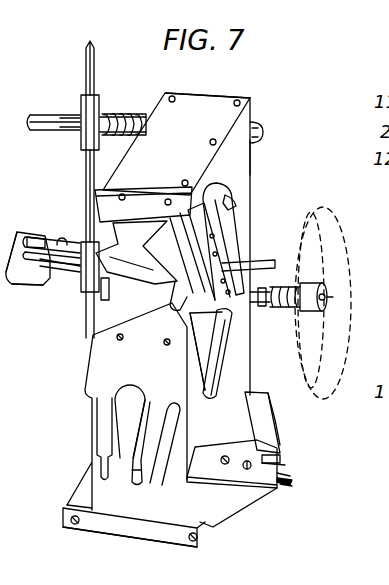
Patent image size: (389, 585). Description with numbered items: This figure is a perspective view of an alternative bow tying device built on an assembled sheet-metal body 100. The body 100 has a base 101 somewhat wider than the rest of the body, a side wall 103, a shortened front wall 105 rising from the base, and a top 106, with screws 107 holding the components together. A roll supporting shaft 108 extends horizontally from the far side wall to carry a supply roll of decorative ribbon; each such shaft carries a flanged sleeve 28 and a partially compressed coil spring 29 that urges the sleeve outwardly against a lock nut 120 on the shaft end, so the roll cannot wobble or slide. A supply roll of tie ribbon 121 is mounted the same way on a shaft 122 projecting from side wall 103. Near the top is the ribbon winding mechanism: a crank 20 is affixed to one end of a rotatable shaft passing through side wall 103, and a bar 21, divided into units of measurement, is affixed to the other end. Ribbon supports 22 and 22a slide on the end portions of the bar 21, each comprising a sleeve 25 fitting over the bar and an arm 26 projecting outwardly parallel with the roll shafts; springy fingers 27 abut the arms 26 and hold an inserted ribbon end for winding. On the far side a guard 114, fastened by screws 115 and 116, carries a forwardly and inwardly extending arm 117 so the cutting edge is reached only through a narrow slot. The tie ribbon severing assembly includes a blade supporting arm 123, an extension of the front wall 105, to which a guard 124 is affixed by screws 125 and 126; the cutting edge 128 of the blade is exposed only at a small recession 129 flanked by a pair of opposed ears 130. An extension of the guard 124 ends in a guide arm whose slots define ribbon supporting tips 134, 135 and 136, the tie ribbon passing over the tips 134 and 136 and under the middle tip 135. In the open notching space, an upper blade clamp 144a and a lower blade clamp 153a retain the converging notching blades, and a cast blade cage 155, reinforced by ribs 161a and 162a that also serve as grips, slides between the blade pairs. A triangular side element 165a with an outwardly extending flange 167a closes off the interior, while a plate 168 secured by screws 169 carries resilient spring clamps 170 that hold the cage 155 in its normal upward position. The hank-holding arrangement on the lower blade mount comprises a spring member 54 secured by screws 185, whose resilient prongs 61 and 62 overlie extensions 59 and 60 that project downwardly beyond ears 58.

The crank 20 is at (225, 267).
The bar 21 is at (85, 167).
The ribbon support 22 is at (78, 137).
The ribbon support 22a is at (80, 268).
The sleeve 25 is at (84, 110).
The arm 26 is at (40, 116).
The fingers 27 is at (35, 130).
The flanged sleeve 28 is at (306, 312).
The coil spring 29 is at (118, 116).
The spring member 54 is at (102, 367).
The ears 58 is at (174, 409).
The extension 59 is at (108, 480).
The extension 60 is at (140, 474).
The resilient prong 61 is at (104, 437).
The resilient prong 62 is at (142, 452).
The body 100 is at (262, 161).
The base 101 is at (75, 490).
The side wall 103 is at (240, 174).
The front wall 105 is at (135, 510).
The top 106 is at (195, 100).
The screws 107 is at (247, 100).
The roll supporting shaft 108 is at (143, 127).
The guard 114 is at (17, 240).
The screw 115 is at (34, 238).
The screw 116 is at (63, 240).
The arm 117 is at (40, 290).
The lock nut 120 is at (328, 306).
The supply roll of tie ribbon 121 is at (333, 229).
The shaft 122 is at (275, 319).
The blade supporting arm 123 is at (256, 500).
The guard 124 is at (203, 453).
The screw 125 is at (226, 465).
The screw 126 is at (248, 470).
The cutting edge 128 is at (288, 430).
The recession 129 is at (284, 463).
The ears 130 is at (257, 450).
The ribbon supporting tip 134 is at (290, 476).
The ribbon supporting tip 135 is at (292, 480).
The ribbon supporting tip 136 is at (292, 485).
The blade clamp 144a is at (200, 275).
The lower blade clamp 153a is at (197, 358).
The blade cage 155 is at (170, 261).
The rib 161a is at (144, 328).
The rib 162a is at (193, 270).
The side element 165a is at (217, 355).
The flange 167a is at (222, 378).
The plate 168 is at (137, 194).
The screws 169 is at (166, 203).
The spring clamps 170 is at (185, 234).
The screws 185 is at (166, 345).